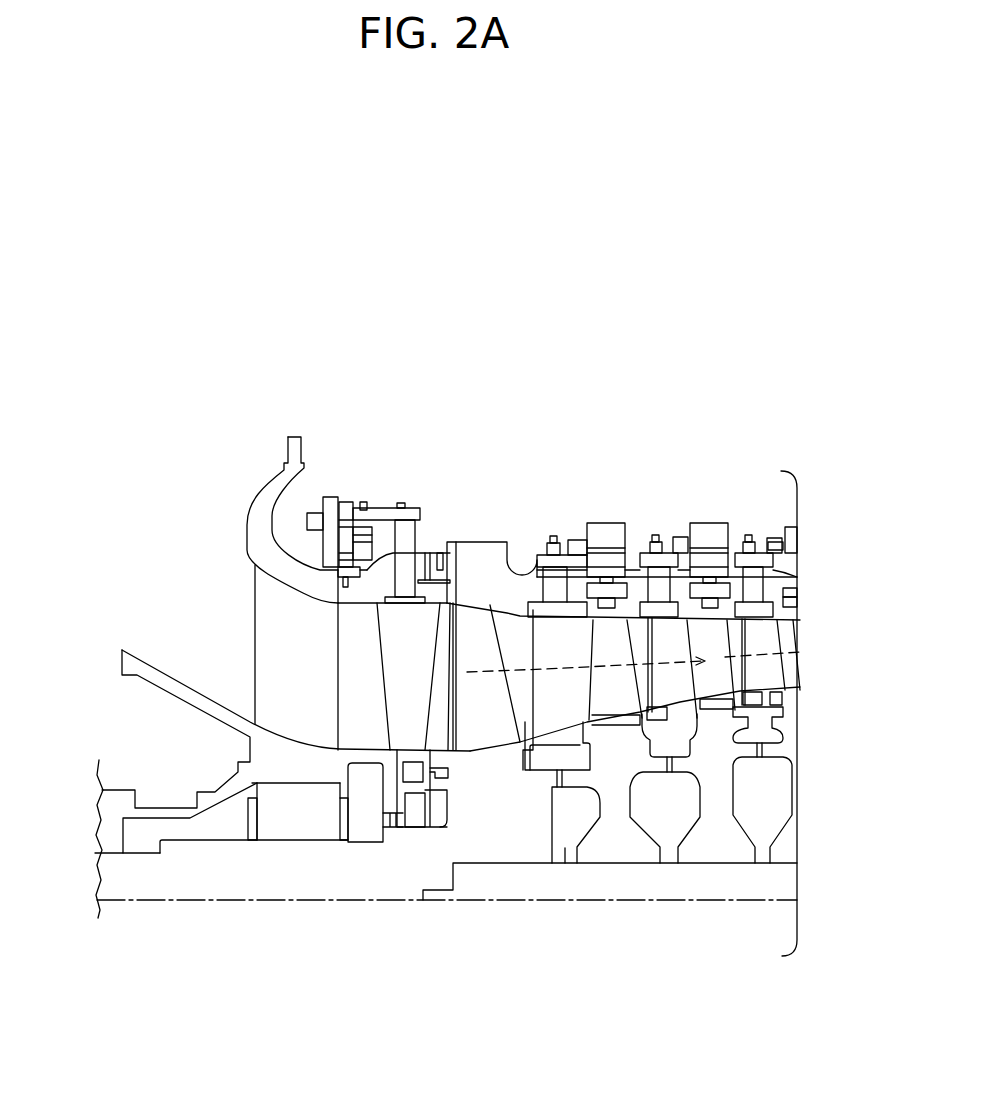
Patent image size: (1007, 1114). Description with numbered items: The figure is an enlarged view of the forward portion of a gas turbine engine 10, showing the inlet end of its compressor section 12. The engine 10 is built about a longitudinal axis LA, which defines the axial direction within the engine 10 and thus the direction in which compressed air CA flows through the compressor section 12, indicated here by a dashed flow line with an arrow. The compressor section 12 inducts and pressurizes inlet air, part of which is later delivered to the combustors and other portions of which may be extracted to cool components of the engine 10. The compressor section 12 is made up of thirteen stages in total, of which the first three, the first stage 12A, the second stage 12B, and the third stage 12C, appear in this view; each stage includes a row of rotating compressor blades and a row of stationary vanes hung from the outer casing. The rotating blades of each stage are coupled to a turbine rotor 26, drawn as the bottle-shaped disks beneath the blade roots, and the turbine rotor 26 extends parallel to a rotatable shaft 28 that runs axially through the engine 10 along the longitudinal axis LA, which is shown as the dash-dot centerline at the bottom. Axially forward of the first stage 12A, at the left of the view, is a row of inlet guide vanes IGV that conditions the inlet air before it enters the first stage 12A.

The gas turbine engine 10 is at (470, 248).
The compressor section 12 is at (597, 490).
The first stage 12A is at (518, 740).
The second stage 12B is at (642, 712).
The third stage 12C is at (737, 697).
The turbine rotor 26 is at (715, 847).
The rotatable shaft 28 is at (113, 876).
The inlet guide vanes IGV is at (402, 648).
The compressed air CA is at (522, 670).
The longitudinal axis LA is at (253, 903).